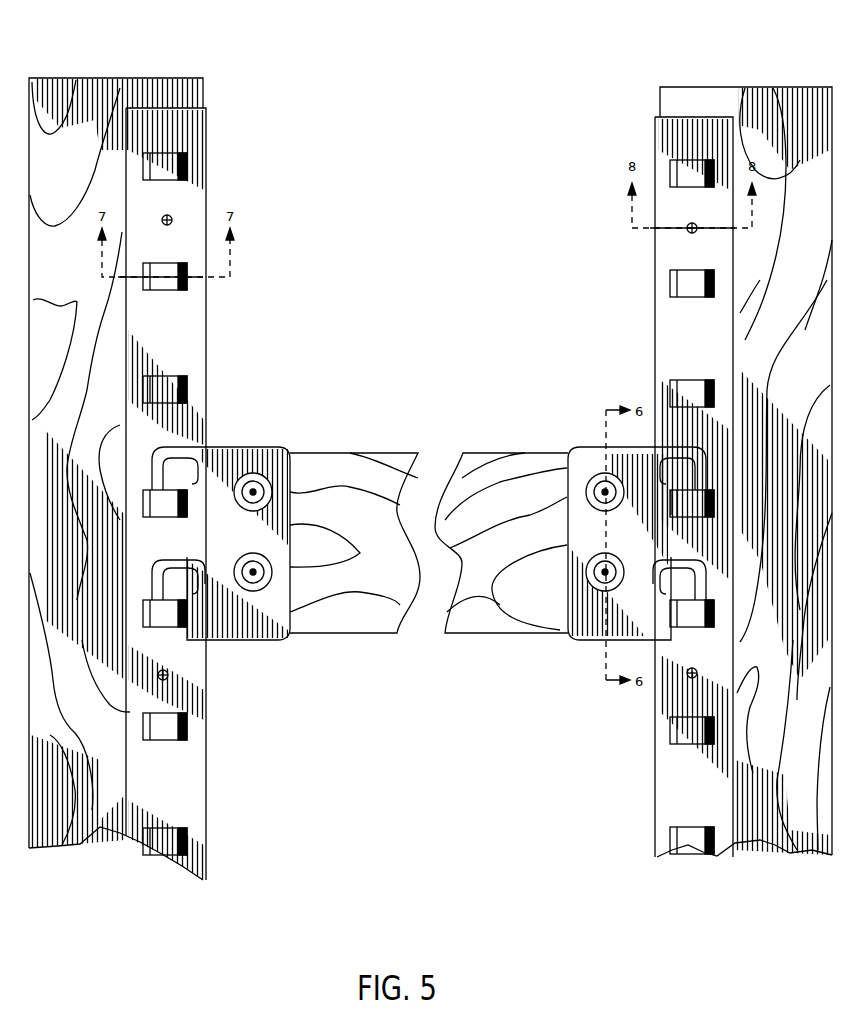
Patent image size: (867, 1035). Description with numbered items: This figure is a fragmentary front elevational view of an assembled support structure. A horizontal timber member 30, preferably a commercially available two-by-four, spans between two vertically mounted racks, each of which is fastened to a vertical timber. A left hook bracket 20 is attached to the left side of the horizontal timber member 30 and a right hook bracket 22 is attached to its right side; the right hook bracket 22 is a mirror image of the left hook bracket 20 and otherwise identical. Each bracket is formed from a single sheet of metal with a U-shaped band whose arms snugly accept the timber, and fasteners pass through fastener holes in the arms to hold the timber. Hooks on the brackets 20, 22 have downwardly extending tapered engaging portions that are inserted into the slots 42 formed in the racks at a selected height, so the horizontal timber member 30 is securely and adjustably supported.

The left hook bracket 20 is at (250, 640).
The right hook bracket 22 is at (587, 450).
The horizontal timber member 30 is at (372, 635).
The slot 42 is at (165, 378).